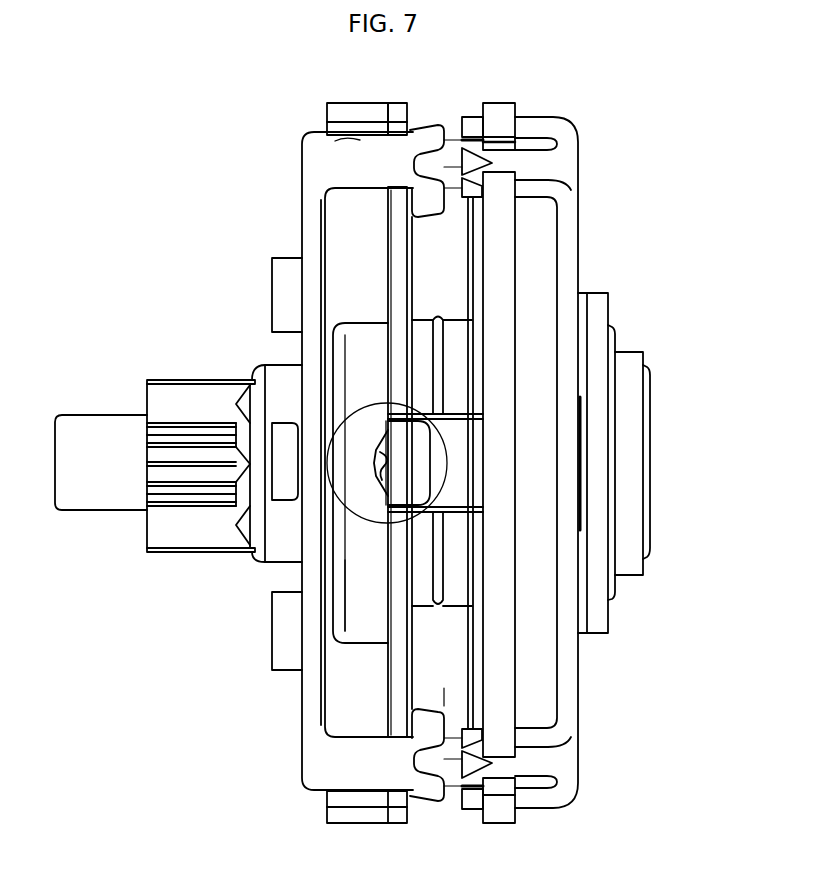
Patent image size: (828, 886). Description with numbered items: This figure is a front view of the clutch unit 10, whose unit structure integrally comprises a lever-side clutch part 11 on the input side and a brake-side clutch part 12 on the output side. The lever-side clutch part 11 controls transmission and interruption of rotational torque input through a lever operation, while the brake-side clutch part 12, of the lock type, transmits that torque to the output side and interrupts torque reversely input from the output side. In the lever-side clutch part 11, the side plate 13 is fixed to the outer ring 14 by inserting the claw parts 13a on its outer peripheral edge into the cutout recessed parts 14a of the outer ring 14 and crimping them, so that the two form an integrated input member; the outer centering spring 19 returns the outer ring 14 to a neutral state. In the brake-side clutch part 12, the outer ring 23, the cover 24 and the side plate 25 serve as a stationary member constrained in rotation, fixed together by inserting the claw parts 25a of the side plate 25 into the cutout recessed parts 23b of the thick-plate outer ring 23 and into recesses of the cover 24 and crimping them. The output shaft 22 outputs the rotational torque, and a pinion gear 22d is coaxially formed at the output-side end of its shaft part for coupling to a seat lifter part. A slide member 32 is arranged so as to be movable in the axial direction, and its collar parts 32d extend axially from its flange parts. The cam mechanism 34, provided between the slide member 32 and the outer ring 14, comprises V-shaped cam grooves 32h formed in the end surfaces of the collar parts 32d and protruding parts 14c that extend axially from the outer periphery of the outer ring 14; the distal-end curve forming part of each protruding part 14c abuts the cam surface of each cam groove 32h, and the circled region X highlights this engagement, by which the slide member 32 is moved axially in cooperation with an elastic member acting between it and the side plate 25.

The clutch unit 10 is at (602, 449).
The lever-side clutch part 11 is at (581, 263).
The brake-side clutch part 12 is at (277, 240).
The side plate 13 is at (570, 681).
The claw parts 13a is at (540, 162).
The outer ring 14 is at (506, 226).
The cutout recessed parts 14a is at (497, 135).
The protruding parts 14c is at (428, 598).
The outer centering spring 19 is at (443, 687).
The output shaft 22 is at (179, 380).
The pinion gear 22d is at (176, 530).
The outer ring 23 is at (346, 116).
The cutout recessed parts 23b is at (337, 141).
The cover 24 is at (401, 284).
The side plate 25 is at (313, 694).
The claw parts 25a is at (362, 150).
The slide member 32 is at (332, 391).
The collar parts 32d is at (360, 577).
The cam grooves 32h is at (385, 476).
The cam mechanism 34 is at (373, 443).
The detail region X is at (452, 445).